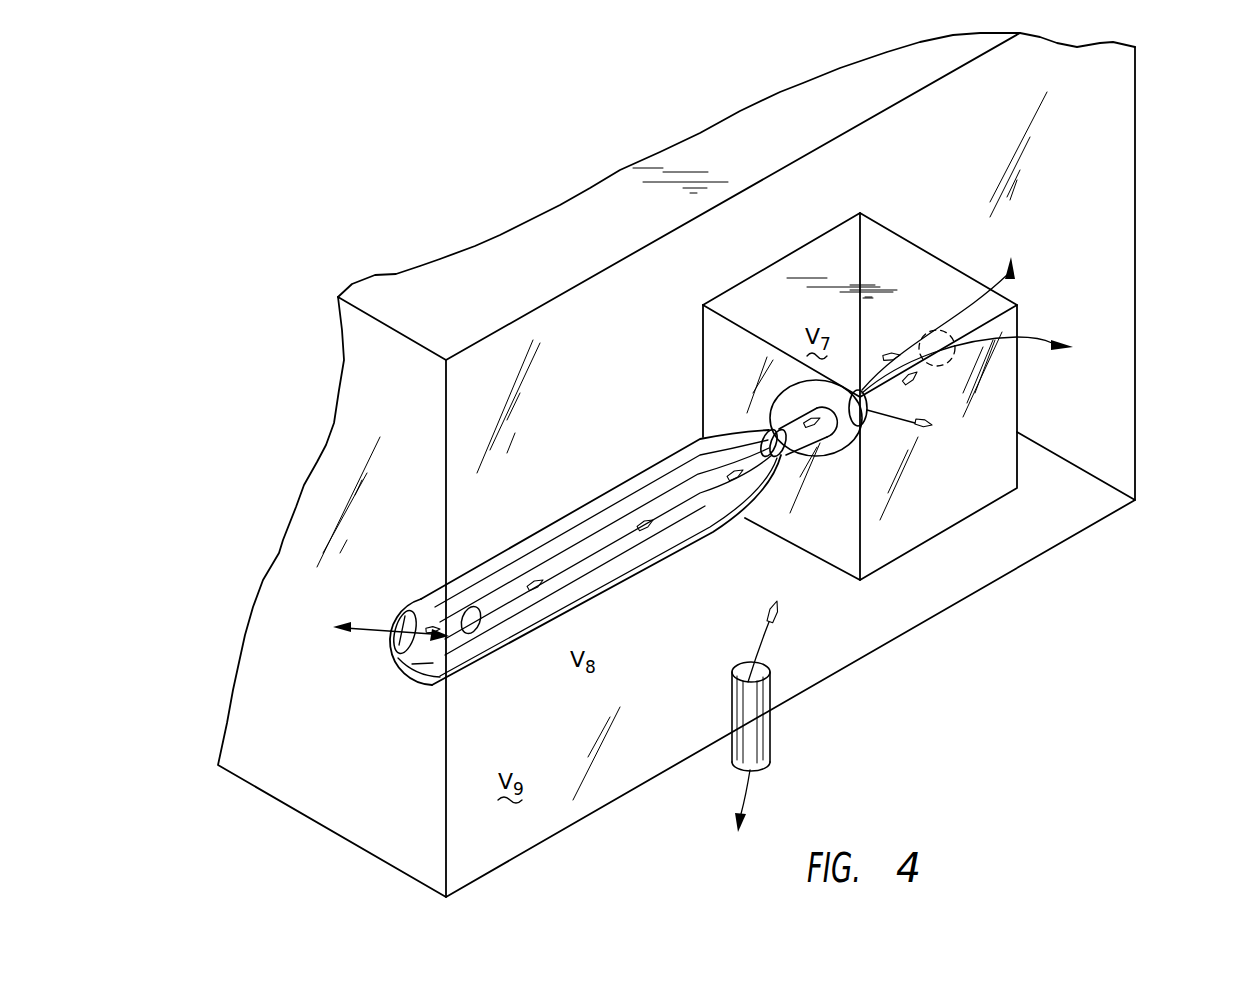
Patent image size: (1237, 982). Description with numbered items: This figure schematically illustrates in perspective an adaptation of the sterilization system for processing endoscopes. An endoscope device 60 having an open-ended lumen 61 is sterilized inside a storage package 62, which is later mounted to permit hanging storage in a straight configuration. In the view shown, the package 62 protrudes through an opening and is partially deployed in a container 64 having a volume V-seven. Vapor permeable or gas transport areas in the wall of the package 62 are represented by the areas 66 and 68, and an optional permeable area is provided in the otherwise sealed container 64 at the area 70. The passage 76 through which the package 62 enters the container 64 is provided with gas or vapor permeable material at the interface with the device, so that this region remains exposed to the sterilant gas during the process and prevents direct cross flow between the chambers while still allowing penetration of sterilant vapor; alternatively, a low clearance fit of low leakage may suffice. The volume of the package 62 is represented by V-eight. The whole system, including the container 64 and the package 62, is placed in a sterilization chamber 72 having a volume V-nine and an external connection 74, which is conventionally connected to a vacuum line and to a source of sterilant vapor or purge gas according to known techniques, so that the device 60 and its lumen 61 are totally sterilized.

The endoscope device 60 is at (470, 662).
The open-ended lumen 61 is at (465, 610).
The storage package 62 is at (583, 503).
The container 64 is at (787, 256).
The vapor permeable area 66 is at (407, 615).
The vapor permeable area 68 is at (867, 413).
The optional permeable area 70 is at (940, 330).
The sterilization chamber 72 is at (1137, 323).
The external connection 74 is at (772, 747).
The passage 76 is at (777, 460).